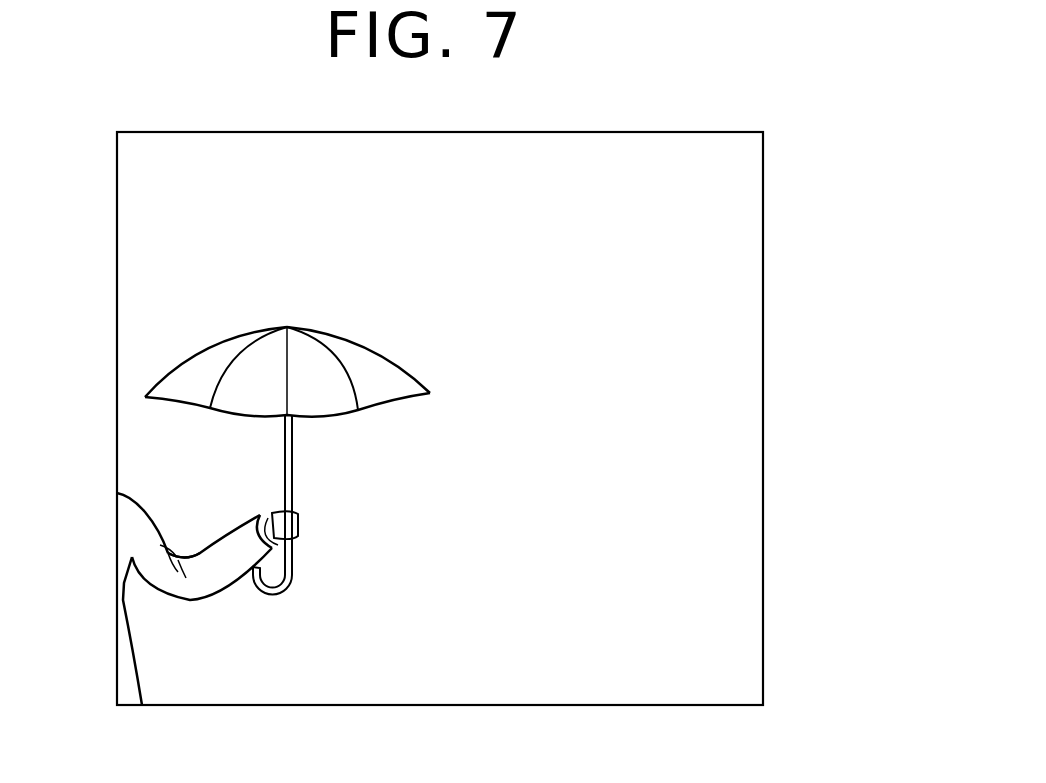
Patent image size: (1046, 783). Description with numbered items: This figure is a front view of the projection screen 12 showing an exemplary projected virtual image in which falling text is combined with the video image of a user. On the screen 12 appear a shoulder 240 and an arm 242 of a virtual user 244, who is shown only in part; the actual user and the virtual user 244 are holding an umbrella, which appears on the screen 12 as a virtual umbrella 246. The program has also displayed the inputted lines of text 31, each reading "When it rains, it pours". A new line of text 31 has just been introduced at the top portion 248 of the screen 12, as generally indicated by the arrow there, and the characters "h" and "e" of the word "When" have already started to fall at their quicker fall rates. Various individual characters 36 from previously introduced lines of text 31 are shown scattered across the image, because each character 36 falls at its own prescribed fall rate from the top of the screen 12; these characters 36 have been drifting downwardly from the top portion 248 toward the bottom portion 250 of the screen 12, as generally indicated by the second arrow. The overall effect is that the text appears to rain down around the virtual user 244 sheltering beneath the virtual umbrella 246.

The projection screen 12 is at (333, 668).
The line of text 31 is at (753, 162).
The character 36 is at (565, 140).
The shoulder 240 is at (128, 533).
The arm 242 is at (215, 565).
The virtual user 244 is at (125, 671).
The virtual umbrella 246 is at (323, 385).
The top portion 248 is at (770, 255).
The bottom portion 250 is at (770, 568).